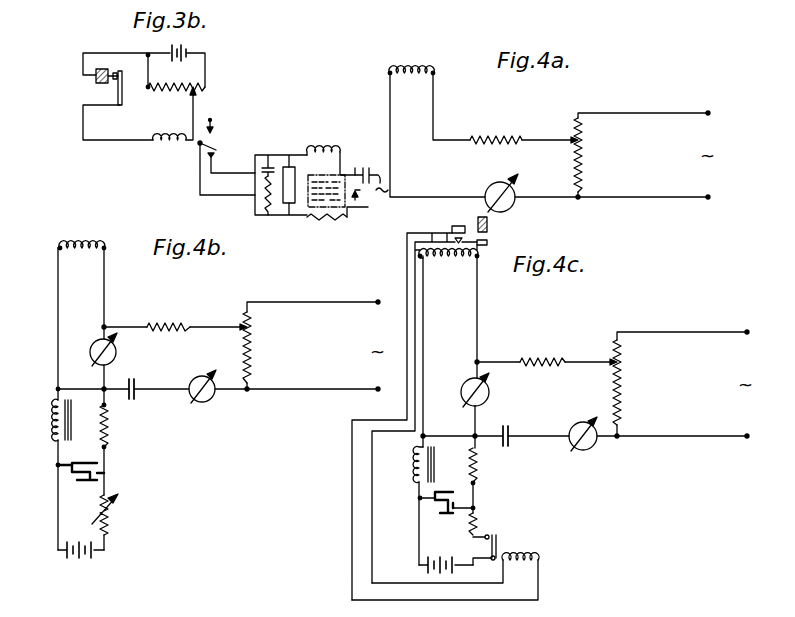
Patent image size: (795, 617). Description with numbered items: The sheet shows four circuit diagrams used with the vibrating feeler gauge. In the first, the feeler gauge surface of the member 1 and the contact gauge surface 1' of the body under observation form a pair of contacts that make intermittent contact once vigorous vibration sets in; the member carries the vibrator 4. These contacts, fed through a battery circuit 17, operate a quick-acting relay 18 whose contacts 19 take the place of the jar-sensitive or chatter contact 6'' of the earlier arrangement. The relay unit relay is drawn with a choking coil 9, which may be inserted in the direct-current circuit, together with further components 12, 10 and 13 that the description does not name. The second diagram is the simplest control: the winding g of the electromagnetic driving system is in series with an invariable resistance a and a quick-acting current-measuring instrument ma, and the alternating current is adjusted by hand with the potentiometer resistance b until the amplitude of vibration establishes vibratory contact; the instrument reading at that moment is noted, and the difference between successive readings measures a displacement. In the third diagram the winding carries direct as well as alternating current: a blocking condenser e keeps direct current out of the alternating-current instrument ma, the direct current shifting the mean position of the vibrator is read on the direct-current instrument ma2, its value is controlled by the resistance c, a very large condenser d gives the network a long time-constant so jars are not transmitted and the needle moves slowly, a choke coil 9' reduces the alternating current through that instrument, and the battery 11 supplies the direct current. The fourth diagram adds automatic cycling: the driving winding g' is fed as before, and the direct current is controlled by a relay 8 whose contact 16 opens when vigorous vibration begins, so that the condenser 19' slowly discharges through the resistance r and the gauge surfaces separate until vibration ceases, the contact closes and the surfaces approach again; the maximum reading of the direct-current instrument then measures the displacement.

In FIG. 3B, the contact gauge surface 1' is at (107, 58).
In FIG. 4C, the contact gauge surface 1' is at (494, 228).
In FIG. 3B, the feeler gauge member 1 is at (125, 68).
In FIG. 4C, the feeler gauge member 1 is at (489, 251).
In FIG. 3B, the vibrator 4 is at (122, 100).
In FIG. 3B, the battery circuit 17 is at (207, 86).
In FIG. 3B, the quick acting relay 18 is at (178, 146).
In FIG. 3B, the relay contacts 19 is at (226, 157).
In FIG. 3B, the choking coil 9 is at (324, 136).
In FIG. 3B, the choke coil 12 is at (264, 196).
In FIG. 3B, the element relay is at (289, 205).
In FIG. 3B, the tube heater coil 10 is at (320, 222).
In FIG. 3B, the vacuum tube cathode lead 13 is at (360, 202).
In FIG. 4A, the winding g is at (411, 54).
In FIG. 4B, the winding g is at (81, 231).
In FIG. 4A, the resistance a is at (508, 133).
In FIG. 4A, the potentiometer resistance b is at (583, 166).
In FIG. 4B, the potentiometer resistance b is at (250, 365).
In FIG. 4C, the potentiometer resistance b is at (621, 389).
In FIG. 4A, the alternating-current measuring instrument ma is at (513, 206).
In FIG. 4B, the alternating-current measuring instrument ma is at (114, 358).
In FIG. 4C, the alternating-current measuring instrument ma is at (488, 396).
In FIG. 4B, the direct-current measuring instrument ma2 is at (210, 401).
In FIG. 4C, the direct-current measuring instrument ma2 is at (593, 452).
In FIG. 4B, the choke coil 9' is at (48, 409).
In FIG. 4C, the choke coil 9' is at (410, 465).
In FIG. 4B, the blocking condenser e is at (136, 397).
In FIG. 4C, the blocking condenser e is at (511, 446).
In FIG. 4B, the condenser d is at (98, 467).
In FIG. 4B, the resistance c is at (111, 513).
In FIG. 4B, the battery 11 is at (91, 556).
In FIG. 4C, the battery 11 is at (458, 566).
In FIG. 4C, the chatter contact 6'' is at (452, 225).
In FIG. 4C, the coil g' is at (448, 272).
In FIG. 4C, the rectifier element 19' is at (456, 480).
In FIG. 4C, the resistance r is at (480, 531).
In FIG. 4C, the relay contact 16 is at (498, 536).
In FIG. 4C, the relay 8 is at (530, 570).